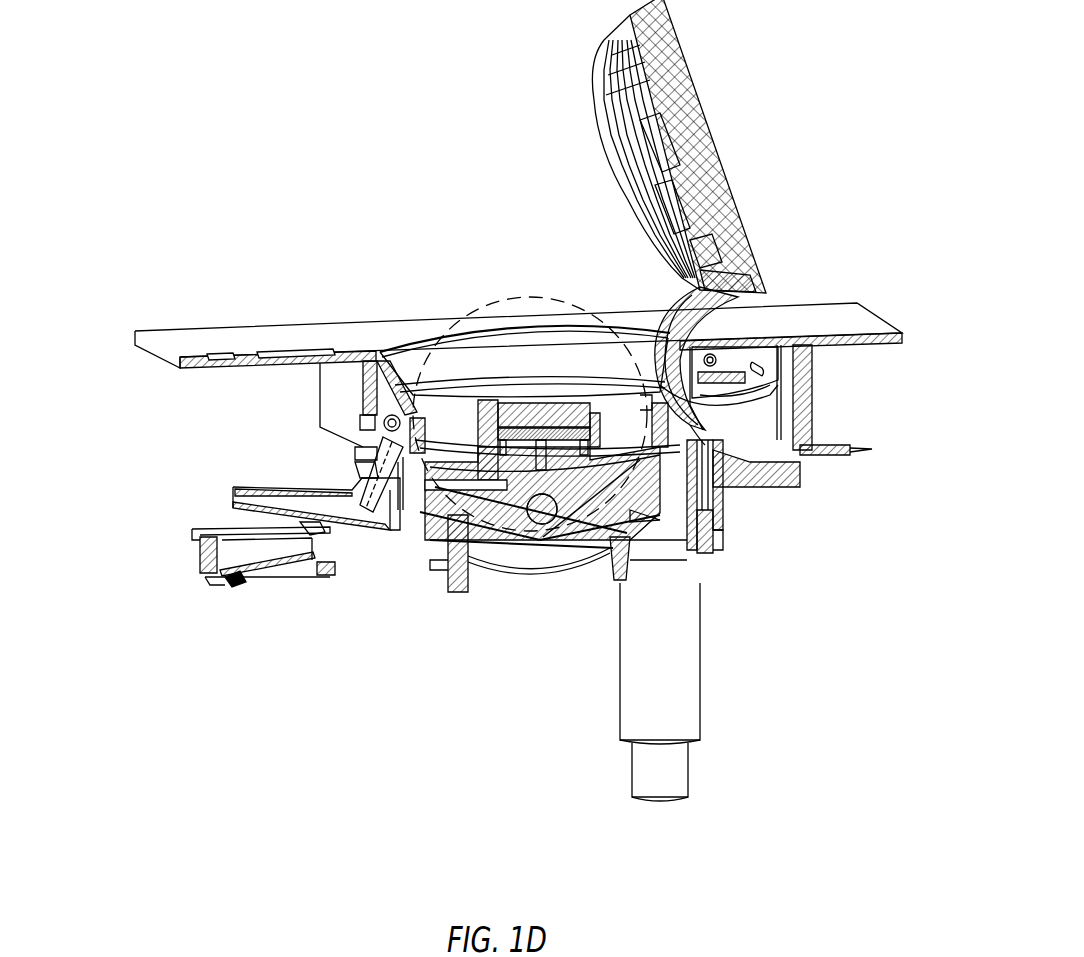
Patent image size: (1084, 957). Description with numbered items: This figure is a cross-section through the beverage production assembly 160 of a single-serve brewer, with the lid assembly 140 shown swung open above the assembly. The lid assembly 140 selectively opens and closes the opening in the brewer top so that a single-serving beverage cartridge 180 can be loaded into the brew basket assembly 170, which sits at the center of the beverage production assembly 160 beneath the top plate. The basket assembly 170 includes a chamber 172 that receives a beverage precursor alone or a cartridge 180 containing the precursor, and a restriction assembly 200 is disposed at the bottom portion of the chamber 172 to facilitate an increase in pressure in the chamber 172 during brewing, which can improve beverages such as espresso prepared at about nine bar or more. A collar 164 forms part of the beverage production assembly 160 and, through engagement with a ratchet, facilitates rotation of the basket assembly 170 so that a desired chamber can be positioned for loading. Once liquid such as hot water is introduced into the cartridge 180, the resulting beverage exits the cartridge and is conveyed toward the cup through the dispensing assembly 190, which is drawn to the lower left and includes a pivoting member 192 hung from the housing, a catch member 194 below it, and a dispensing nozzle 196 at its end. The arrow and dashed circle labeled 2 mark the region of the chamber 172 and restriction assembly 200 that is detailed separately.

The FIG. 2 section indication 2 is at (503, 297).
The lid assembly 140 is at (757, 183).
The beverage production assembly 160 is at (208, 294).
The collar 164 is at (700, 436).
The brew basket assembly 170 is at (437, 545).
The chamber 172 is at (610, 404).
The single-serving beverage cartridge 180 is at (497, 398).
The dispensing assembly 190 is at (224, 500).
The pivoting member 192 is at (365, 462).
The catch member 194 is at (288, 566).
The dispensing nozzle 196 is at (238, 586).
The restriction assembly 200 is at (618, 410).